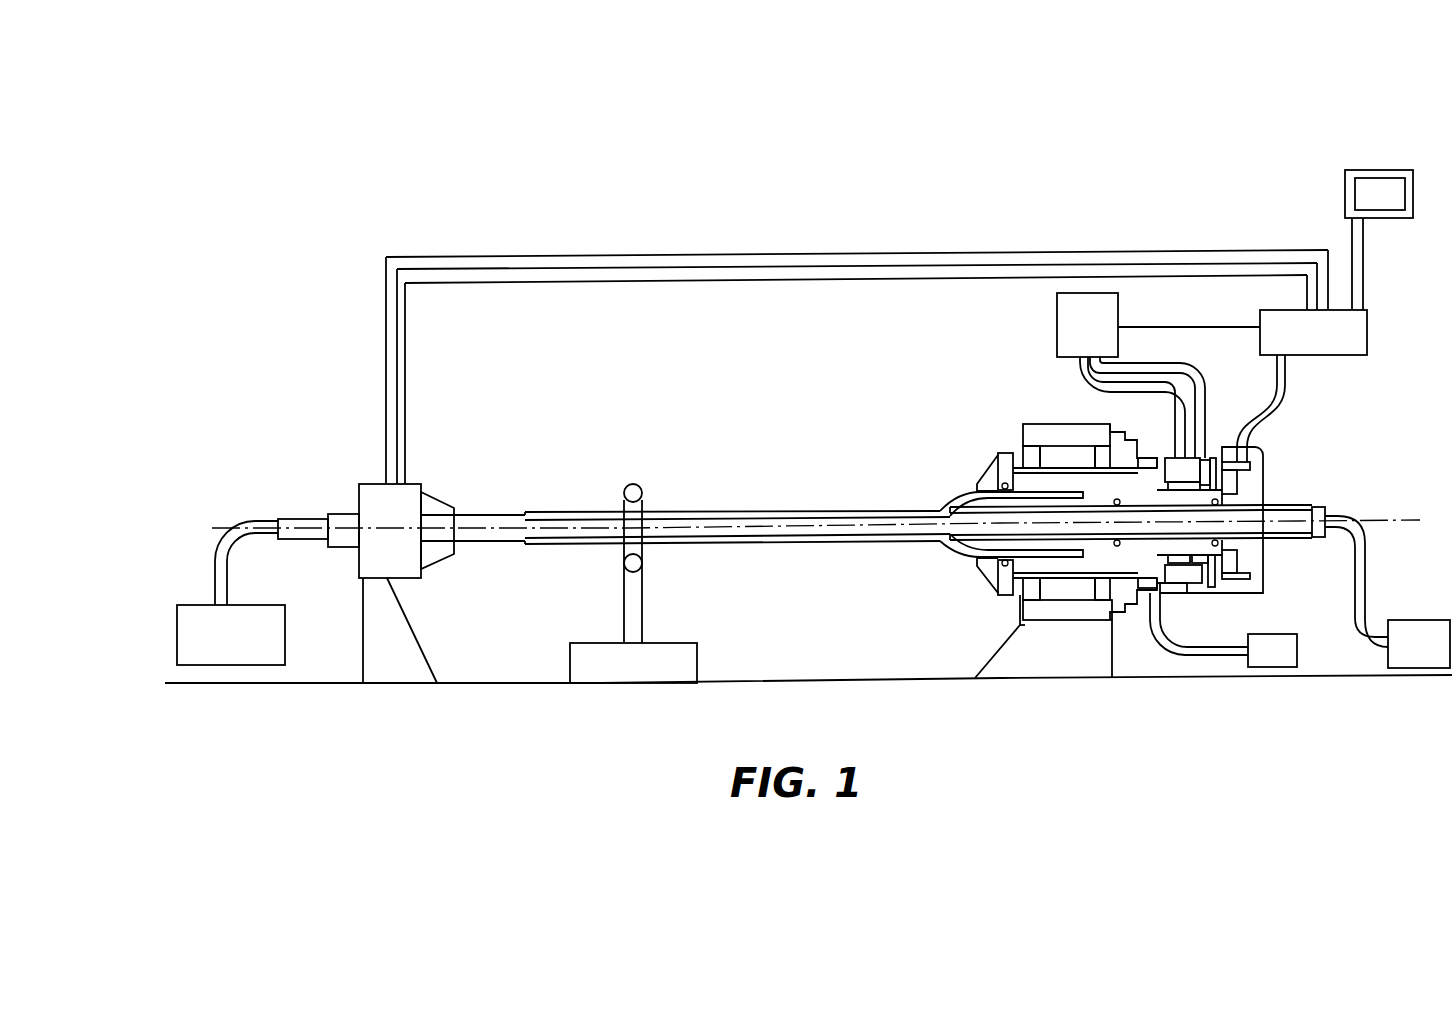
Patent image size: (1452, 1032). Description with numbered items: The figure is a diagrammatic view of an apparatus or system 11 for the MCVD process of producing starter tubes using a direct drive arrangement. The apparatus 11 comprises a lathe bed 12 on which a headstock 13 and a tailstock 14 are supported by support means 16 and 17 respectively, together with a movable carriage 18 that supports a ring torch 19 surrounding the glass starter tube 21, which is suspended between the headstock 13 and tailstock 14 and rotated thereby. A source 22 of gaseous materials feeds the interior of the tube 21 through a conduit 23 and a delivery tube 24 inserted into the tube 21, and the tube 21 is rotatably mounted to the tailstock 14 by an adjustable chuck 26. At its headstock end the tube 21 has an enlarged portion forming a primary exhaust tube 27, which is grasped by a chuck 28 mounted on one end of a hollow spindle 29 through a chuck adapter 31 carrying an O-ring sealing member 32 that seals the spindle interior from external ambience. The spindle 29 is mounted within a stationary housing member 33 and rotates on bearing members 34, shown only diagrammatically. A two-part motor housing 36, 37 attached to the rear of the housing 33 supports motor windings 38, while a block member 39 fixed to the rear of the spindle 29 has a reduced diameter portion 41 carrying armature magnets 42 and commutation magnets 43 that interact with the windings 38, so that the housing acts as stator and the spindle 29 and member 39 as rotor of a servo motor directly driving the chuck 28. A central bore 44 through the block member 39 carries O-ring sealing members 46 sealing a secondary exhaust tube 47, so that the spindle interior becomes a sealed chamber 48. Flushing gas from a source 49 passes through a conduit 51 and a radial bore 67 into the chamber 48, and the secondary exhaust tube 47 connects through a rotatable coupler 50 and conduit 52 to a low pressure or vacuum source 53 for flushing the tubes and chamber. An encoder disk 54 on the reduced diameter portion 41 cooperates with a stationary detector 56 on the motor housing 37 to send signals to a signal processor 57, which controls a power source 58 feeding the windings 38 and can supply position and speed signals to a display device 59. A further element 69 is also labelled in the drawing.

The apparatus or system 11 is at (714, 375).
The lathe bed 12 is at (512, 680).
The headstock 13 is at (1040, 425).
The tailstock 14 is at (372, 482).
The support means 16 is at (1000, 656).
The support means 17 is at (414, 622).
The movable carriage 18 is at (700, 652).
The ring torch 19 is at (634, 482).
The glass starter tube 21 is at (340, 552).
The source of gaseous materials 22 is at (185, 605).
The conduit 23 is at (217, 556).
The delivery tube 24 is at (303, 517).
The adjustable chuck 26 is at (438, 492).
The primary exhaust tube 27 is at (965, 550).
The chuck 28 is at (985, 470).
The hollow spindle 29 is at (1022, 640).
The chuck adapter 31 is at (1007, 455).
The O-ring sealing member 32 is at (1001, 486).
The stationary housing member 33 is at (1095, 432).
The bearing members 34 is at (1031, 455).
The motor housing part 36 is at (1180, 600).
The motor housing part 37 is at (1262, 582).
The motor windings 38 is at (1182, 456).
The block member 39 is at (1122, 553).
The reduced diameter portion 41 is at (1230, 501).
The armature magnets 42 is at (1205, 456).
The commutation magnets 43 is at (1238, 560).
The central bore 44 is at (1113, 500).
The O-ring sealing members 46 is at (1119, 499).
The secondary exhaust tube 47 is at (1305, 506).
The sealed chamber 48 is at (1055, 483).
The source of flushing gas 49 is at (1275, 669).
The rotatable coupler 50 is at (1328, 515).
The conduit 51 is at (1203, 657).
The conduit 52 is at (1372, 568).
The low pressure or vacuum source 53 is at (1417, 669).
The encoder disk 54 is at (1237, 485).
The stationary detector 56 is at (1250, 460).
The signal processor 57 is at (1360, 340).
The power source 58 is at (1057, 321).
The display 59 is at (1357, 168).
The radial bore 67 is at (1158, 597).
The seal plate 69 is at (1214, 462).